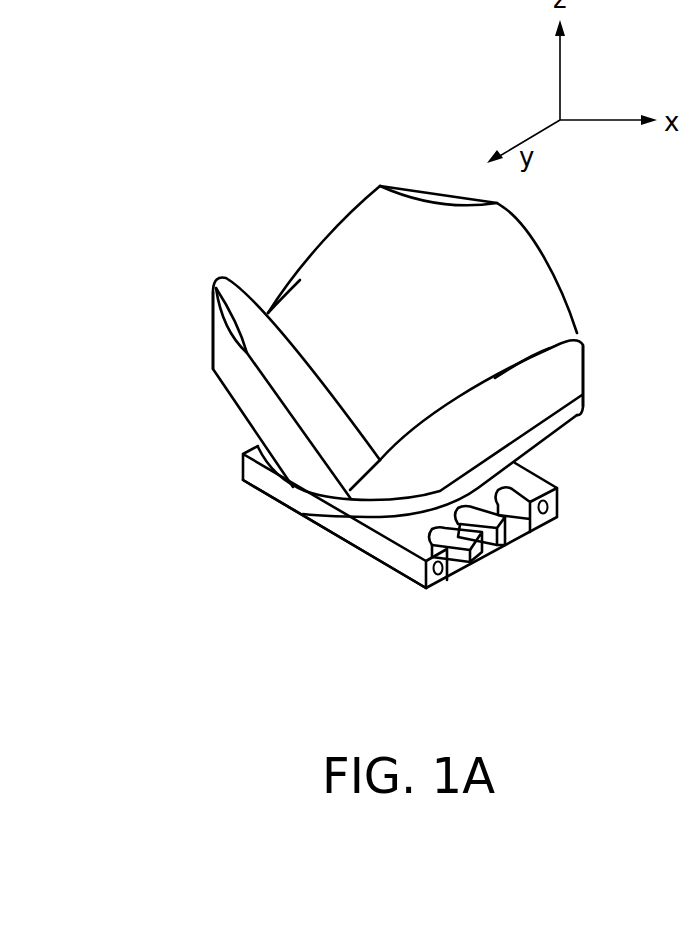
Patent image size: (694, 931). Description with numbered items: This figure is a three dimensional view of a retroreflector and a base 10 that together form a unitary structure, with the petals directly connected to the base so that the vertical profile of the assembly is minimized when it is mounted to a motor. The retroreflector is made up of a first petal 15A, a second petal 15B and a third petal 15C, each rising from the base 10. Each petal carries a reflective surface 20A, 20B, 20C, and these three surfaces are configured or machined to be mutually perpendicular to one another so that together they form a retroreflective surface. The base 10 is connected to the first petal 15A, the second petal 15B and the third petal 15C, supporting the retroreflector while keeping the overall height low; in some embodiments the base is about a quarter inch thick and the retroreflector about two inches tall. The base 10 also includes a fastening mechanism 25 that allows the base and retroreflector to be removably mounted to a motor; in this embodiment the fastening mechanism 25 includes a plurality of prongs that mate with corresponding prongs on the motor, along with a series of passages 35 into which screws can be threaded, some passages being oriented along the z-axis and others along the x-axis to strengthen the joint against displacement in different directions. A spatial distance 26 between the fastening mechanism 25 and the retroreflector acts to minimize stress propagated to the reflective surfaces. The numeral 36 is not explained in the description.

The base 10 is at (312, 508).
The first petal 15A is at (213, 376).
The second petal 15B is at (440, 185).
The third petal 15C is at (583, 398).
The reflective surface 20A is at (232, 300).
The reflective surface 20B is at (446, 318).
The reflective surface 20C is at (541, 350).
The fastening mechanism 25 is at (522, 547).
The spatial distance 26 is at (412, 537).
The passage 35 is at (446, 578).
The bend line 36 is at (268, 313).